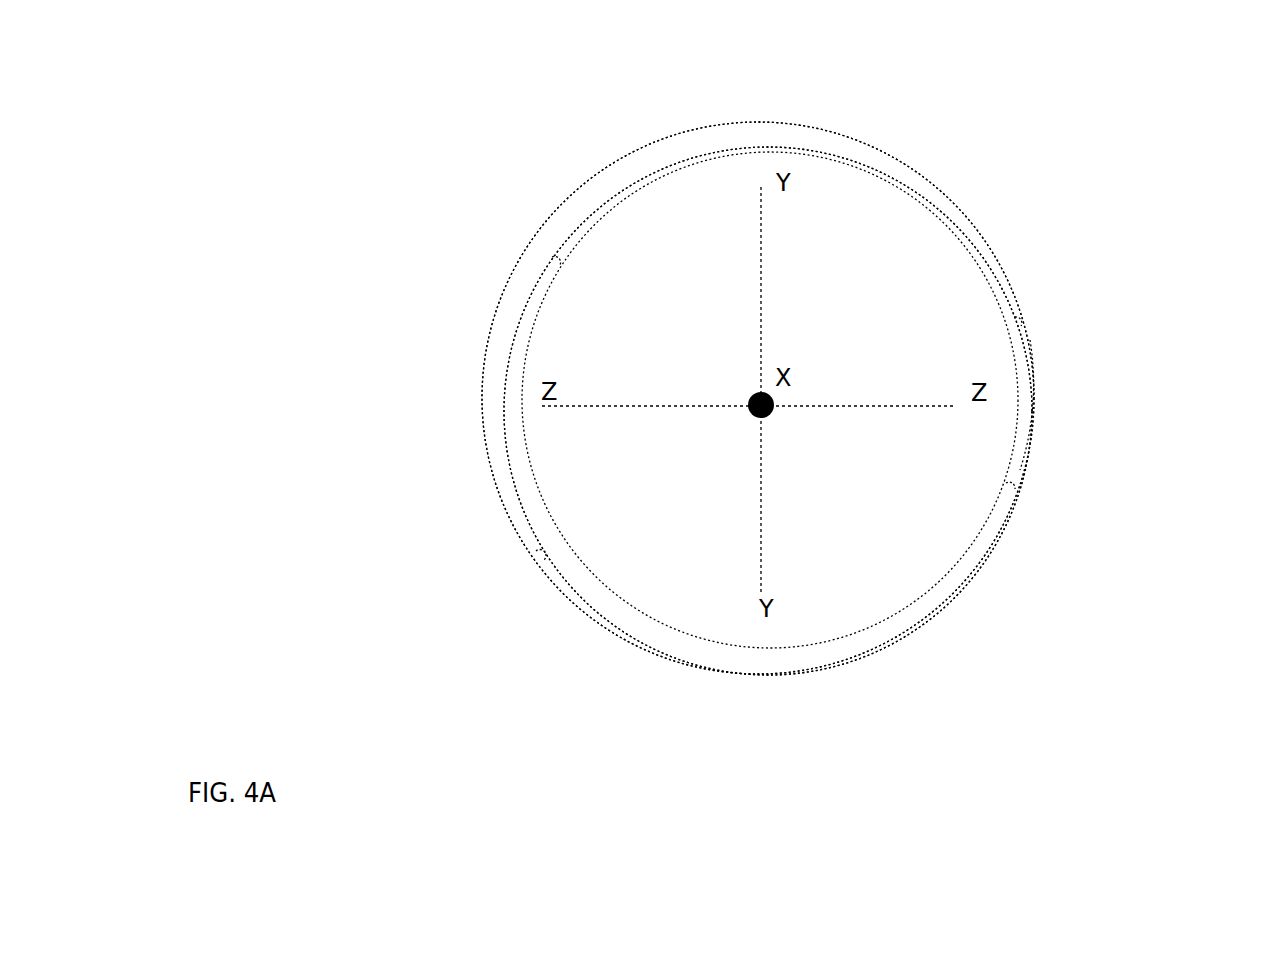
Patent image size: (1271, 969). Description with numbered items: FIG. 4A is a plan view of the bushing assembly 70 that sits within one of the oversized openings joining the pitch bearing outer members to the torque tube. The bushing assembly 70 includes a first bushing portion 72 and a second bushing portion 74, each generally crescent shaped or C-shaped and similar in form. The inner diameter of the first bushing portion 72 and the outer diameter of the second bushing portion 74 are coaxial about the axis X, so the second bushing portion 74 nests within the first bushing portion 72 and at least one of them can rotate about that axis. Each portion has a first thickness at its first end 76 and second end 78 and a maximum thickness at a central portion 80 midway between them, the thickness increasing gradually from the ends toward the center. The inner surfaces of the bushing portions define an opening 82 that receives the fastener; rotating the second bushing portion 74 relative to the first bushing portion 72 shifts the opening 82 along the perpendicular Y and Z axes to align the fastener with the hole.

The bushing assembly 70 is at (512, 195).
The first bushing portion 72 is at (503, 354).
The second bushing portion 74 is at (843, 656).
The first end 76 is at (535, 556).
The second end 78 is at (558, 264).
The central portion 80 is at (663, 154).
The opening 82 is at (856, 243).